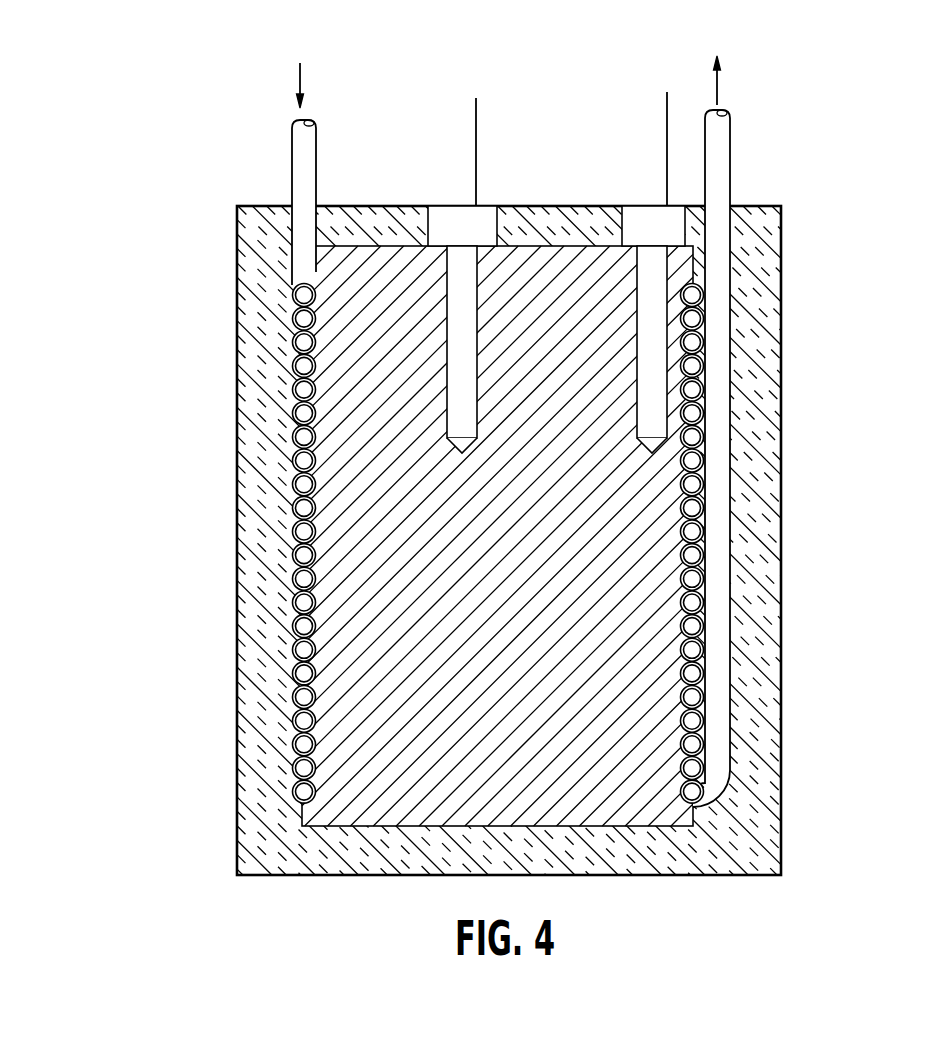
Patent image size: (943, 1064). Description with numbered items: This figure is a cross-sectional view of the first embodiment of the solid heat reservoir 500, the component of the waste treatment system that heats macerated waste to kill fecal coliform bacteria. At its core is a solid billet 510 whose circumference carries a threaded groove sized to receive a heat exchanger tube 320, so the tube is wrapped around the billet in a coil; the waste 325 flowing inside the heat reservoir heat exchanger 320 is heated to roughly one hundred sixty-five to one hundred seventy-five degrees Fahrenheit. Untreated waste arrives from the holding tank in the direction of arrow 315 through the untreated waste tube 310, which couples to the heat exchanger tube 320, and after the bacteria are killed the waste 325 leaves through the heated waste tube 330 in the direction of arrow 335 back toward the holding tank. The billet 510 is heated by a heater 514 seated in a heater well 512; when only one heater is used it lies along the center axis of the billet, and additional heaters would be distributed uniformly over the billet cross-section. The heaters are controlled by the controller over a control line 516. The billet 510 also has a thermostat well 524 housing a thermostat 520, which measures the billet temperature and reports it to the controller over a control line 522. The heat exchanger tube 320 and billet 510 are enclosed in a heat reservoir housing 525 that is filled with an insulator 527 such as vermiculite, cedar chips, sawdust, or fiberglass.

The heat reservoir 500 is at (443, 446).
The solid billet 510 is at (618, 775).
The heater well 512 is at (473, 262).
The heater 514 is at (440, 205).
The control line 516 is at (476, 127).
The thermostat 520 is at (637, 206).
The control line 522 is at (667, 110).
The thermostat well 524 is at (663, 262).
The heat reservoir housing 525 is at (238, 702).
The insulator 527 is at (258, 635).
The untreated waste tube 310 is at (292, 163).
The arrow 315 is at (277, 85).
The heat exchanger tube 320 is at (290, 343).
The waste 325 is at (300, 432).
The heated waste tube 330 is at (731, 142).
The arrow 335 is at (716, 61).